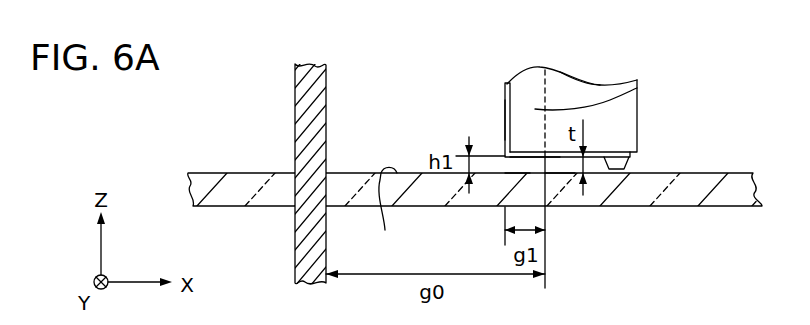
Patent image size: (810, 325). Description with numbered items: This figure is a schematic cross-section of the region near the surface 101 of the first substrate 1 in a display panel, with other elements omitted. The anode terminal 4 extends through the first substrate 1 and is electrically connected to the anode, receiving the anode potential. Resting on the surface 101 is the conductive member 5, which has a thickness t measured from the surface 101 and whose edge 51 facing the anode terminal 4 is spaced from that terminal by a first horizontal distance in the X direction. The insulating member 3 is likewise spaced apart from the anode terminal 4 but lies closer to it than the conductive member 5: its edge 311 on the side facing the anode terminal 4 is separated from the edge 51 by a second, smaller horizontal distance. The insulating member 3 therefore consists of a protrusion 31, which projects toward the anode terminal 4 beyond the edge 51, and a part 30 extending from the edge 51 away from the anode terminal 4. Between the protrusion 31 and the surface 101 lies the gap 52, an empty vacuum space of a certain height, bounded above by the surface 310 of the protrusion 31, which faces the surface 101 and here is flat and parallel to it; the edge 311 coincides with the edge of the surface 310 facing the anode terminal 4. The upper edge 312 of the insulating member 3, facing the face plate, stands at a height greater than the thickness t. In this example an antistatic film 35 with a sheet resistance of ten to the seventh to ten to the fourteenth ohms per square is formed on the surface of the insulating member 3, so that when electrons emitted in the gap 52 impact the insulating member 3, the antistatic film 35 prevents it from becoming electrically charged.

The first substrate 1 is at (730, 190).
The anode terminal 4 is at (303, 124).
The surface of the first substrate 101 is at (380, 211).
The gap 52 is at (517, 167).
The edge of the conductive member 51 is at (547, 174).
The conductive member 5 is at (622, 167).
The insulating member 3 is at (603, 91).
The part of the insulating member 30 is at (633, 128).
The protrusion 31 is at (638, 90).
The edge of the insulating member 311 is at (503, 106).
The antistatic film 35 is at (507, 125).
The surface of the protrusion 310 is at (535, 157).
The edge of the insulating member facing the face plate 312 is at (578, 70).